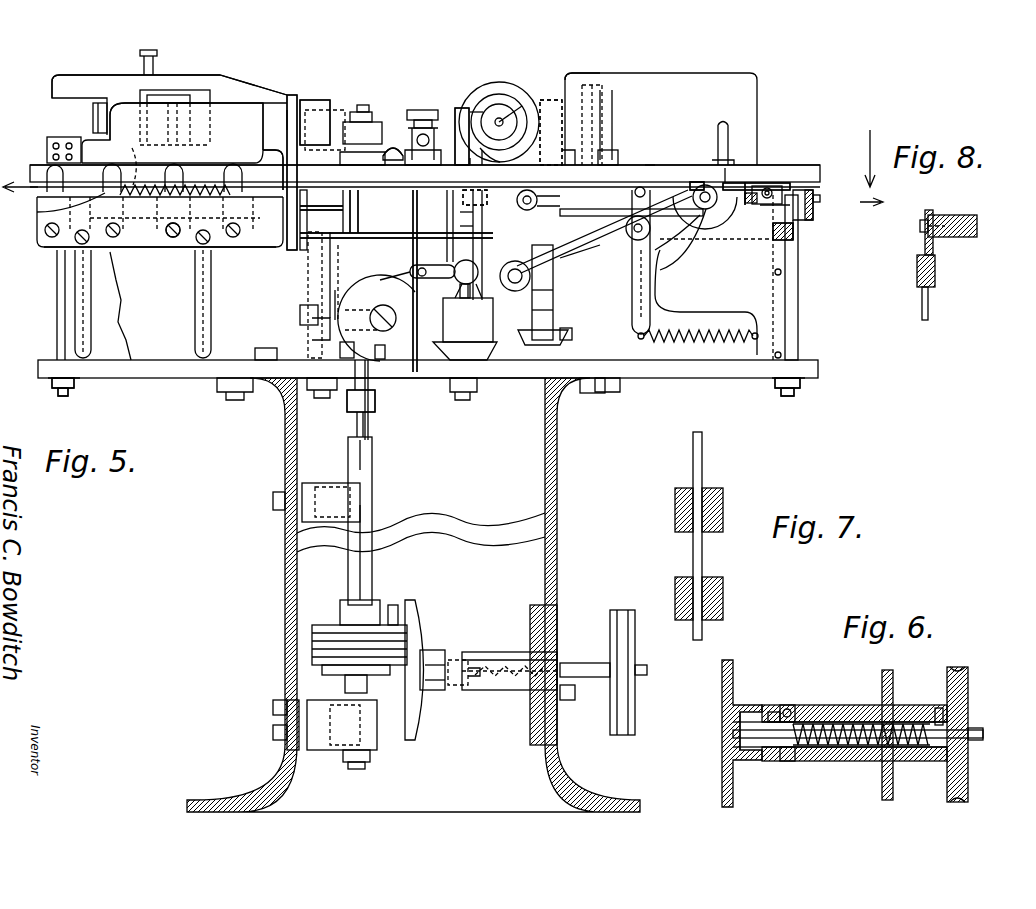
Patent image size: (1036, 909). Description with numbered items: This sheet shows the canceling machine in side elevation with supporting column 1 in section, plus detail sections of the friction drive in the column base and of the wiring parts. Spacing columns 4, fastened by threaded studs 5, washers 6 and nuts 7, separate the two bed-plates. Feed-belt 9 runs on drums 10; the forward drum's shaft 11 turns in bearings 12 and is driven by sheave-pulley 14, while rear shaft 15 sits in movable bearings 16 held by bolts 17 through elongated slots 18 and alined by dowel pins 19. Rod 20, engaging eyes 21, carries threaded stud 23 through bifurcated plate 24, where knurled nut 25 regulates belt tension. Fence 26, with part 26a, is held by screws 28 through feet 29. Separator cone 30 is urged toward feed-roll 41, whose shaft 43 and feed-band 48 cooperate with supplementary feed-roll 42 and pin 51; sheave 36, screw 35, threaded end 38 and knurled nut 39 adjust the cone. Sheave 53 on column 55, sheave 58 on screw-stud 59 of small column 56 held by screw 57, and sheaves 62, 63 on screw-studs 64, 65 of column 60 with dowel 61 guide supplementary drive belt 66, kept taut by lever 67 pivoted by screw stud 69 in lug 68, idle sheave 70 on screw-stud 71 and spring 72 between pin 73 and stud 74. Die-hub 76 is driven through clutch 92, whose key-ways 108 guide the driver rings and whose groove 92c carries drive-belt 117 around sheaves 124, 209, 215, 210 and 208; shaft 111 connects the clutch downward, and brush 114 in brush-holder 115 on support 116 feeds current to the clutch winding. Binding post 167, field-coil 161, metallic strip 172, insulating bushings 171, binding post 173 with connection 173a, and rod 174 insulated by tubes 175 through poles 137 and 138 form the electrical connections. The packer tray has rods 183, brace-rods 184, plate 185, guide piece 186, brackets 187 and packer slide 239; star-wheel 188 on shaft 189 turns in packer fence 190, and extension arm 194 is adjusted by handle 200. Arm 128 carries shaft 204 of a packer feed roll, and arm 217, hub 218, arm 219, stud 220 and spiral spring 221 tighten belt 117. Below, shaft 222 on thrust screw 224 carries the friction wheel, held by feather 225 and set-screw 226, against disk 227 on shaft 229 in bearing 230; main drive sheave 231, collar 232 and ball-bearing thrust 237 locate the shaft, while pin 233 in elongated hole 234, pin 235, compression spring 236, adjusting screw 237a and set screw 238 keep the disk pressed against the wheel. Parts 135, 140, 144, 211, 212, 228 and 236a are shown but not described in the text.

In FIG. 5, the pedestal stand 1 is at (556, 560).
In FIG. 5, the frame 4 is at (60, 315).
In FIG. 5, the nut 5 is at (795, 394).
In FIG. 5, the washer 6 is at (805, 380).
In FIG. 5, the bolt 7 is at (770, 390).
In FIG. 5, the cable 9 is at (682, 250).
In FIG. 8, the cable 9 is at (889, 208).
In FIG. 5, the arm 10 is at (725, 210).
In FIG. 5, the link rod 11 is at (598, 226).
In FIG. 5, the pivot 12 is at (612, 199).
In FIG. 5, the bracket 14 is at (795, 236).
In FIG. 5, the disc 15 is at (705, 207).
In FIG. 5, the stop 16 is at (712, 182).
In FIG. 5, the pivot pin 17 is at (770, 182).
In FIG. 5, the bracket 18 is at (770, 184).
In FIG. 5, the lever 19 is at (755, 168).
In FIG. 5, the bracket 20 is at (800, 188).
In FIG. 5, the arm 21 is at (750, 203).
In FIG. 5, the support 23 is at (793, 230).
In FIG. 5, the bar 24 is at (820, 198).
In FIG. 5, the block 25 is at (813, 210).
In FIG. 5, the housing 26 is at (661, 119).
In FIG. 5, the housing top 26a is at (566, 80).
In FIG. 5, the pin 28 is at (606, 158).
In FIG. 5, the block 29 is at (730, 168).
In FIG. 5, the disc 30 is at (499, 82).
In FIG. 5, the bracket 35 is at (478, 150).
In FIG. 5, the rim 36 is at (475, 145).
In FIG. 5, the hub 38 is at (508, 104).
In FIG. 5, the guide 39 is at (530, 108).
In FIG. 5, the arm 41 is at (483, 112).
In FIG. 5, the rod 42 is at (590, 110).
In FIG. 5, the support 43 is at (565, 150).
In FIG. 5, the post 48 is at (470, 108).
In FIG. 5, the pin 51 is at (461, 267).
In FIG. 5, the stud 53 is at (478, 270).
In FIG. 5, the collar 55 is at (542, 309).
In FIG. 5, the block 56 is at (463, 196).
In FIG. 5, the main bar 57 is at (425, 173).
In FIG. 5, the plate 58 is at (454, 226).
In FIG. 5, the plate 59 is at (460, 212).
In FIG. 5, the base 60 is at (553, 318).
In FIG. 5, the bolt 61 is at (528, 380).
In FIG. 5, the post 62 is at (553, 250).
In FIG. 5, the pulley 63 is at (545, 273).
In FIG. 5, the hub 64 is at (508, 278).
In FIG. 5, the collar 65 is at (553, 290).
In FIG. 5, the arm 66 is at (630, 262).
In FIG. 5, the arm 67 is at (632, 288).
In FIG. 5, the pivot 68 is at (646, 193).
In FIG. 5, the pin 69 is at (650, 180).
In FIG. 5, the pivot 70 is at (660, 258).
In FIG. 5, the lever 71 is at (662, 272).
In FIG. 5, the spring 72 is at (710, 341).
In FIG. 5, the spring anchor 73 is at (644, 338).
In FIG. 5, the bar 74 is at (798, 340).
In FIG. 5, the screw 76 is at (380, 125).
In FIG. 5, the rail 92 is at (335, 300).
In FIG. 5, the rail 92c is at (332, 262).
In FIG. 5, the rod 108 is at (317, 275).
In FIG. 5, the rod 111 is at (357, 416).
In FIG. 5, the block 114 is at (318, 305).
In FIG. 5, the bracket 115 is at (312, 322).
In FIG. 5, the nut 116 is at (272, 340).
In FIG. 5, the rail 117 is at (330, 272).
In FIG. 5, the plate 124 is at (427, 281).
In FIG. 5, the column 128 is at (287, 198).
In FIG. 5, the block 135 is at (362, 124).
In FIG. 7, the collar 137 is at (723, 508).
In FIG. 5, the collar 138 is at (420, 306).
In FIG. 7, the collar 138 is at (723, 602).
In FIG. 5, the base block 140 is at (465, 351).
In FIG. 5, the guide 144 is at (395, 250).
In FIG. 5, the slide 161 is at (392, 268).
In FIG. 5, the link 167 is at (392, 278).
In FIG. 5, the block 171 is at (460, 300).
In FIG. 5, the spring 172 is at (352, 118).
In FIG. 5, the rod 173 is at (470, 320).
In FIG. 8, the rod 173 is at (922, 297).
In FIG. 5, the rod 173a is at (370, 400).
In FIG. 7, the arm 174 is at (700, 547).
In FIG. 8, the arm 174 is at (962, 215).
In FIG. 7, the collar 175 is at (723, 585).
In FIG. 5, the lug 183 is at (95, 170).
In FIG. 5, the leg 184 is at (203, 318).
In FIG. 5, the plate 185 is at (135, 250).
In FIG. 5, the box 186 is at (300, 110).
In FIG. 5, the plate 187 is at (287, 120).
In FIG. 5, the slide 188 is at (195, 100).
In FIG. 5, the slide 189 is at (175, 95).
In FIG. 5, the housing 190 is at (105, 95).
In FIG. 5, the block 194 is at (93, 118).
In FIG. 5, the screw 200 is at (135, 62).
In FIG. 5, the cover 204 is at (287, 97).
In FIG. 5, the bracket 208 is at (250, 252).
In FIG. 5, the link 209 is at (580, 253).
In FIG. 5, the plate 210 is at (384, 225).
In FIG. 5, the block 211 is at (550, 335).
In FIG. 5, the cam 212 is at (377, 300).
In FIG. 5, the plate 215 is at (396, 227).
In FIG. 5, the screw 217 is at (150, 240).
In FIG. 5, the lever 218 is at (70, 207).
In FIG. 5, the link 219 is at (123, 161).
In FIG. 5, the bearing bracket 220 is at (375, 745).
In FIG. 5, the spring 221 is at (160, 196).
In FIG. 5, the bearing bracket 222 is at (360, 500).
In FIG. 5, the gear 224 is at (368, 764).
In FIG. 5, the shaft 225 is at (362, 580).
In FIG. 5, the key 226 is at (392, 604).
In FIG. 5, the flange 227 is at (416, 640).
In FIG. 6, the flange 227 is at (722, 690).
In FIG. 5, the shaft 228 is at (590, 662).
In FIG. 5, the hub 229 is at (448, 690).
In FIG. 6, the hub 229 is at (740, 770).
In FIG. 5, the sleeve 230 is at (505, 690).
In FIG. 6, the sleeve 230 is at (858, 762).
In FIG. 5, the pulley 231 is at (636, 641).
In FIG. 6, the pulley 231 is at (968, 680).
In FIG. 5, the coupling 232 is at (440, 658).
In FIG. 6, the coupling 232 is at (772, 712).
In FIG. 5, the collar 233 is at (438, 690).
In FIG. 6, the collar 233 is at (733, 746).
In FIG. 5, the shaft 234 is at (440, 652).
In FIG. 6, the shaft 234 is at (733, 728).
In FIG. 5, the tube 235 is at (500, 652).
In FIG. 6, the tube 235 is at (775, 762).
In FIG. 5, the spring 236 is at (520, 692).
In FIG. 6, the spring 236 is at (830, 762).
In FIG. 6, the spring seat 236a is at (805, 762).
In FIG. 5, the screw 237 is at (496, 690).
In FIG. 6, the screw 237 is at (788, 705).
In FIG. 5, the shaft end 237a is at (648, 668).
In FIG. 6, the shaft end 237a is at (970, 730).
In FIG. 6, the flange 238 is at (938, 708).
In FIG. 5, the body 239 is at (186, 126).